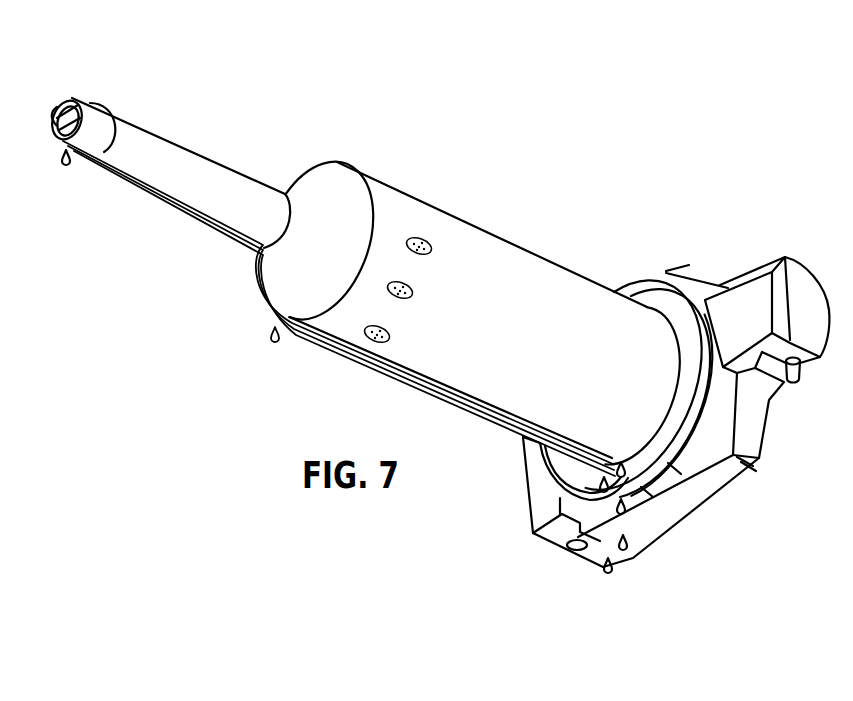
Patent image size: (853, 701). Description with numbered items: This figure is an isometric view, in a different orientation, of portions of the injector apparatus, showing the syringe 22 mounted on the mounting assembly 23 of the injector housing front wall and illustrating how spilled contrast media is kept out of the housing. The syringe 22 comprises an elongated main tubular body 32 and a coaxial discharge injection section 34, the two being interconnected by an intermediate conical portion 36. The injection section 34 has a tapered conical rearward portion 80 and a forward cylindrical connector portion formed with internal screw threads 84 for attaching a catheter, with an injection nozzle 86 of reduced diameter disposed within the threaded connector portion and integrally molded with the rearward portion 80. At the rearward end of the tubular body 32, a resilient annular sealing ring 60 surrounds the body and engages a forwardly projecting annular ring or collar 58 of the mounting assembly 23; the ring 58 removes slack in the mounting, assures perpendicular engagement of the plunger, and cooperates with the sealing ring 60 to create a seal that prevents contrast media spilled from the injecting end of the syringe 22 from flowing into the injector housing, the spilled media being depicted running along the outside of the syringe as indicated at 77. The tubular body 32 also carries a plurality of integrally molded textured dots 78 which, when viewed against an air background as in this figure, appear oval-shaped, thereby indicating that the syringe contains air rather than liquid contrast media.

The syringe 22 is at (498, 212).
The mounting assembly 23 is at (797, 250).
The main tubular body 32 is at (530, 263).
The discharge injection section 34 is at (233, 163).
The intermediate conical portion 36 is at (318, 170).
The annular ring 58 is at (677, 290).
The resilient annular sealing ring 60 is at (652, 297).
The strip 77 is at (100, 127).
The textured dots 78 is at (417, 240).
The rearward portion 80 is at (177, 158).
The internal screw threads 84 is at (103, 108).
The injection nozzle 86 is at (54, 110).